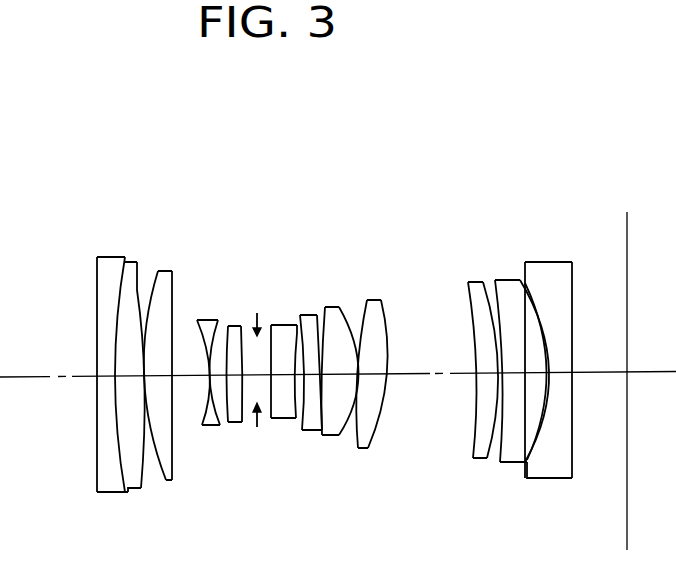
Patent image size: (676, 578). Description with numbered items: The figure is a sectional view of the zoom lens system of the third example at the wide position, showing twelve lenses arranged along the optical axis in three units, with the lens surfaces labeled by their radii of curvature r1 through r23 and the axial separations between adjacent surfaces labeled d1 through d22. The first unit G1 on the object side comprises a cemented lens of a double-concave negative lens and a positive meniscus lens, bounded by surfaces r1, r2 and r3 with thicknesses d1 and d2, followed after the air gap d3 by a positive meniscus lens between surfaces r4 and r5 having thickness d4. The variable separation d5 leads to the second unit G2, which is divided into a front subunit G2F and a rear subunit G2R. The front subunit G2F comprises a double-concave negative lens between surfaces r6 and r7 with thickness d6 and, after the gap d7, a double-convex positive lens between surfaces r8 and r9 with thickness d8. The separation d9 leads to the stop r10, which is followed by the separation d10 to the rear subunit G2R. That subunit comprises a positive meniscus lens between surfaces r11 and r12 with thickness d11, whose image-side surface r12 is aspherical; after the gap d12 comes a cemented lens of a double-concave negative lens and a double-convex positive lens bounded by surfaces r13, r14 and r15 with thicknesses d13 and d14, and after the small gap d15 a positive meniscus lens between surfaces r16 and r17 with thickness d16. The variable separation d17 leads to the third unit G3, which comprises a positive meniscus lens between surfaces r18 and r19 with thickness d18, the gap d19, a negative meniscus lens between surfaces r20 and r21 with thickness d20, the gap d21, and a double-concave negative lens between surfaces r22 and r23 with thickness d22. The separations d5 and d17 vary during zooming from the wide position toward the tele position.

The first unit G1 is at (172, 195).
The second unit G2 is at (363, 137).
The front subunit of the second unit G2F is at (247, 195).
The rear subunit of the second unit G2R is at (363, 195).
The third unit G3 is at (568, 195).
The radius of curvature of the first lens surface r1 is at (97, 290).
The radius of curvature of the second lens surface r2 is at (118, 290).
The radius of curvature of the third lens surface r3 is at (127, 258).
The radius of curvature of the fourth lens surface r4 is at (151, 283).
The radius of curvature of the fifth lens surface r5 is at (173, 290).
The radius of curvature of the sixth lens surface r6 is at (198, 320).
The radius of curvature of the seventh lens surface r7 is at (213, 320).
The radius of curvature of the eighth lens surface r8 is at (228, 325).
The radius of curvature of the ninth lens surface r9 is at (247, 325).
The stop r10 is at (260, 312).
The radius of curvature of the eleventh lens surface r11 is at (282, 325).
The radius of curvature of the twelfth lens surface r12 is at (296, 322).
The radius of curvature of the thirteenth lens surface r13 is at (305, 314).
The radius of curvature of the fourteenth lens surface r14 is at (333, 307).
The radius of curvature of the fifteenth lens surface r15 is at (349, 303).
The radius of curvature of the sixteenth lens surface r16 is at (369, 300).
The radius of curvature of the seventeenth lens surface r17 is at (384, 325).
The radius of curvature of the eighteenth lens surface r18 is at (468, 295).
The radius of curvature of the nineteenth lens surface r19 is at (484, 290).
The radius of curvature of the twentieth lens surface r20 is at (503, 310).
The radius of curvature of the twenty-first lens surface r21 is at (523, 298).
The radius of curvature of the twenty-second lens surface r22 is at (542, 300).
The radius of curvature of the twenty-third lens surface r23 is at (573, 288).
The separation between adjacent lens surfaces d1 is at (108, 378).
The separation between adjacent lens surfaces d2 is at (135, 489).
The separation between adjacent lens surfaces d3 is at (152, 470).
The separation between adjacent lens surfaces d4 is at (162, 375).
The separation between adjacent lens surfaces d5 is at (190, 394).
The separation between adjacent lens surfaces d6 is at (204, 427).
The separation between adjacent lens surfaces d7 is at (225, 426).
The separation between adjacent lens surfaces d8 is at (235, 424).
The separation between adjacent lens surfaces d9 is at (257, 430).
The separation between adjacent lens surfaces d10 is at (270, 421).
The separation between adjacent lens surfaces d11 is at (289, 371).
The separation between adjacent lens surfaces d12 is at (301, 432).
The separation between adjacent lens surfaces d13 is at (323, 437).
The separation between adjacent lens surfaces d14 is at (341, 395).
The separation between adjacent lens surfaces d15 is at (366, 450).
The separation between adjacent lens surfaces d16 is at (380, 378).
The separation between adjacent lens surfaces d17 is at (433, 395).
The separation between adjacent lens surfaces d18 is at (487, 378).
The separation between adjacent lens surfaces d19 is at (503, 378).
The separation between adjacent lens surfaces d20 is at (508, 463).
The separation between adjacent lens surfaces d21 is at (548, 479).
The separation between adjacent lens surfaces d22 is at (558, 379).